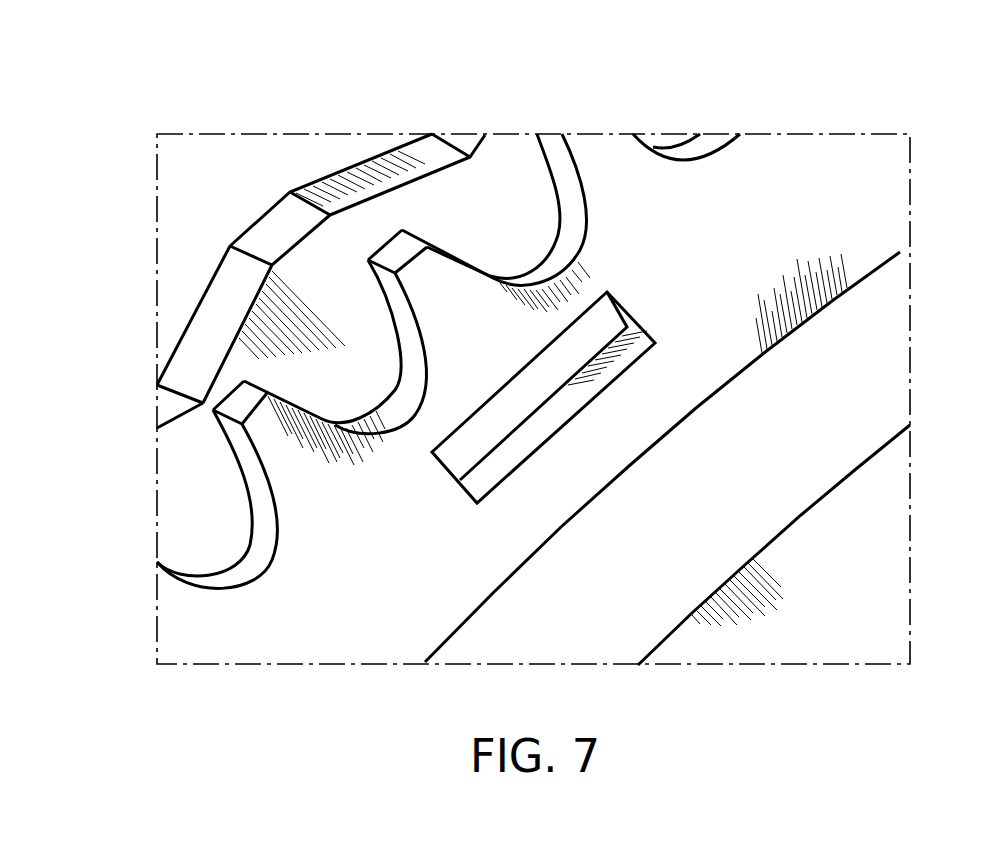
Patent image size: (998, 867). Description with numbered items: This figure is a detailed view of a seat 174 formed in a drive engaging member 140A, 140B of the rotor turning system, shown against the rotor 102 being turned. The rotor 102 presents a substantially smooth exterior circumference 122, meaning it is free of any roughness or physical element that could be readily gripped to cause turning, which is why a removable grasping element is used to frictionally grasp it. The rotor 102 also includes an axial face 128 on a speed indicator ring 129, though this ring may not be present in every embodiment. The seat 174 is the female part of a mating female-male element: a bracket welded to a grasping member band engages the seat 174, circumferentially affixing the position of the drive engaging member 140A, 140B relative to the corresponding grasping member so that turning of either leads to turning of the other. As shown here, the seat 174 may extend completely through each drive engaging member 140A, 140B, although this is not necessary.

The rotor 102 is at (883, 612).
The substantially smooth exterior circumference 122 is at (748, 507).
The axial face 128 is at (457, 208).
The speed indicator ring 129 is at (440, 157).
The seat 174 is at (592, 387).
The drive engaging member 140A is at (575, 378).
The drive engaging member 140B is at (808, 203).